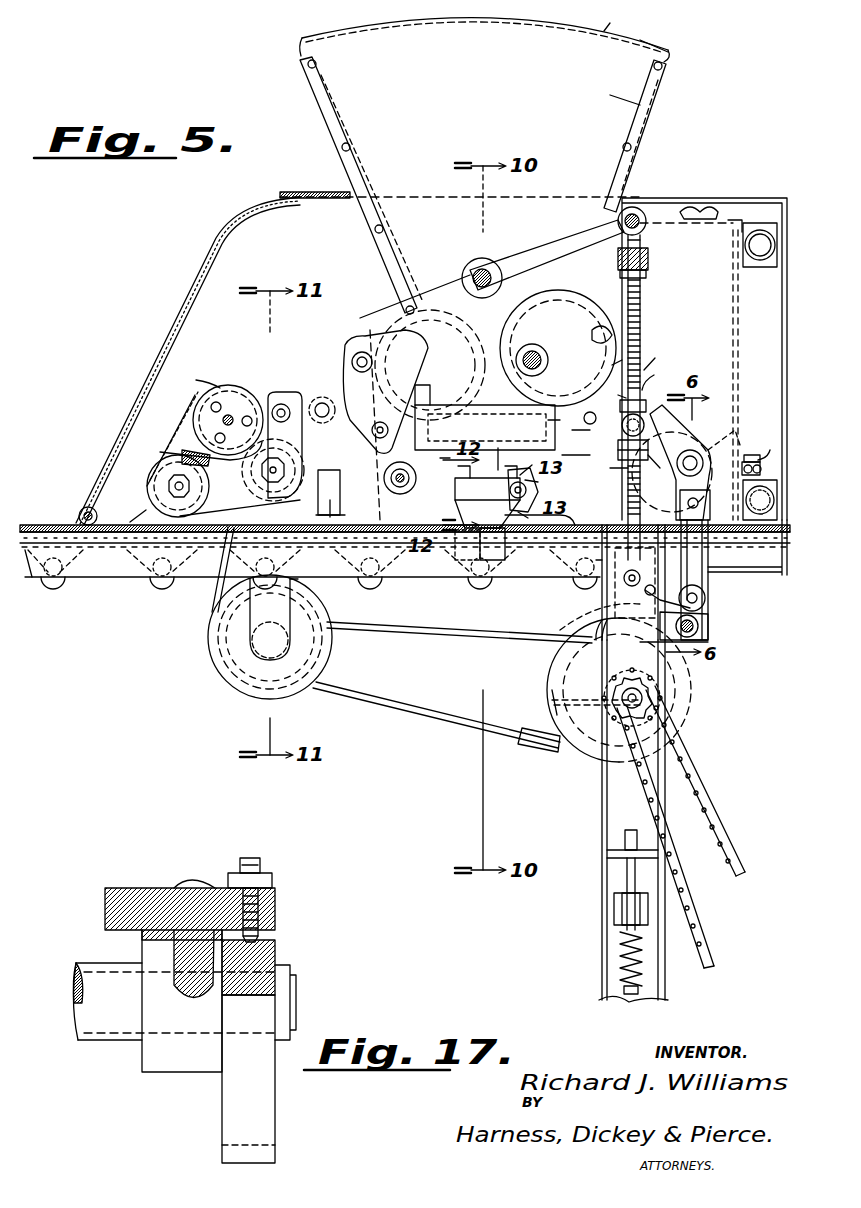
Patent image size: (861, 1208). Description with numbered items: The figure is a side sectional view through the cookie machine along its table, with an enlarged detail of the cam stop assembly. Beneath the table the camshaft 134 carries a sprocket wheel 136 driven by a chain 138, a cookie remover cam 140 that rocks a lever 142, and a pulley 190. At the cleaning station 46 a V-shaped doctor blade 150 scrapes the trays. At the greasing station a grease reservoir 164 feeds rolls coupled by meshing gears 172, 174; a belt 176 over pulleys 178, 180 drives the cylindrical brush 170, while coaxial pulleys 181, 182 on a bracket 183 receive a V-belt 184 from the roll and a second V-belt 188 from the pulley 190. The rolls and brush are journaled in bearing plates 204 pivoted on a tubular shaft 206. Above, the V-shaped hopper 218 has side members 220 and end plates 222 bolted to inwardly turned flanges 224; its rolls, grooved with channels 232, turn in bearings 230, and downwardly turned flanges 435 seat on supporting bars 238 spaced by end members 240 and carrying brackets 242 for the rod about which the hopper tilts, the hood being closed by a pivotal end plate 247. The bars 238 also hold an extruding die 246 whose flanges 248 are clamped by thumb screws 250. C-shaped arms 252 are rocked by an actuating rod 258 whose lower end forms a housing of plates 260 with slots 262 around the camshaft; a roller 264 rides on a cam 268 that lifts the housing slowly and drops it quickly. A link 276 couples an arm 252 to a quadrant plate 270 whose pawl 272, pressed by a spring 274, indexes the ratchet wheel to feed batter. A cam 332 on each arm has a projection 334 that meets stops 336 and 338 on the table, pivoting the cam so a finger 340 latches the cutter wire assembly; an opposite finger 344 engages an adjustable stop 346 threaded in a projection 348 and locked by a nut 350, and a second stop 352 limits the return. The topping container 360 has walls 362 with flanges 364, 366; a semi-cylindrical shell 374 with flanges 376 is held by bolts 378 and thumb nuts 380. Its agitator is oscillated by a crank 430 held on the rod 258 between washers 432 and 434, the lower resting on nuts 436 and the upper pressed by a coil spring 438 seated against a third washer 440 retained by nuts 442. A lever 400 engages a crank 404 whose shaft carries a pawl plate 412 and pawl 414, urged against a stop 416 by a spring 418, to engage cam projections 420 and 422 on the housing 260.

In FIG. 5, the cleaning station 46 is at (80, 510).
In FIG. 5, the cam shaft 134 is at (644, 698).
In FIG. 5, the sprocket wheel 136 is at (654, 706).
In FIG. 5, the chain 138 is at (712, 785).
In FIG. 5, the cookie remover cam 140 is at (562, 668).
In FIG. 5, the lever 142 is at (546, 756).
In FIG. 5, the V-shaped doctor blade 150 is at (126, 500).
In FIG. 5, the grease containing reservoir 164 is at (340, 488).
In FIG. 5, the cylindrical brush 170 is at (166, 440).
In FIG. 5, the meshing gear 172 is at (312, 455).
In FIG. 5, the meshing gear 174 is at (191, 379).
In FIG. 5, the belt 176 is at (184, 424).
In FIG. 5, the pulley 178 is at (234, 384).
In FIG. 5, the pulley 180 is at (168, 462).
In FIG. 5, the smaller pulley 181 is at (333, 652).
In FIG. 5, the larger pulley 182 is at (226, 600).
In FIG. 5, the bracket 183 is at (330, 580).
In FIG. 5, the V-belt 184 is at (332, 612).
In FIG. 5, the second V-belt 188 is at (436, 716).
In FIG. 5, the pulley 190 is at (662, 688).
In FIG. 5, the bearing plates 204 is at (284, 400).
In FIG. 5, the tubular shaft 206 is at (318, 398).
In FIG. 5, the V-shaped hopper 218 is at (672, 50).
In FIG. 5, the side members 220 is at (648, 122).
In FIG. 5, the end plates 222 is at (620, 20).
In FIG. 5, the inwardly turned flanges 224 is at (640, 105).
In FIG. 5, the bearings 230 is at (470, 428).
In FIG. 5, the channels 232 is at (487, 427).
In FIG. 5, the supporting bars 238 is at (590, 424).
In FIG. 5, the end members 240 is at (565, 432).
In FIG. 5, the brackets 242 is at (372, 455).
In FIG. 5, the extruding die 246 is at (575, 462).
In FIG. 5, the end plate 247 is at (155, 338).
In FIG. 5, the flanges 248 is at (585, 439).
In FIG. 5, the thumb screws 250 is at (478, 268).
In FIG. 5, the C-shaped arms 252 is at (530, 244).
In FIG. 17, the C-shaped arms 252 is at (176, 990).
In FIG. 5, the actuating rod 258 is at (640, 305).
In FIG. 5, the flat spaced members 260 is at (600, 790).
In FIG. 5, the slots 262 is at (588, 614).
In FIG. 5, the roller 264 is at (598, 583).
In FIG. 5, the cam 268 is at (552, 694).
In FIG. 5, the quadrant plate 270 is at (644, 328).
In FIG. 5, the pawl 272 is at (600, 300).
In FIG. 5, the spring 274 is at (596, 325).
In FIG. 5, the link 276 is at (516, 362).
In FIG. 5, the cams 332 is at (470, 556).
In FIG. 17, the cams 332 is at (278, 1121).
In FIG. 5, the projection 334 is at (520, 555).
In FIG. 5, the stop 336 is at (562, 516).
In FIG. 5, the stop 338 is at (335, 501).
In FIG. 5, the finger 340 is at (542, 496).
In FIG. 5, the finger 344 is at (455, 510).
In FIG. 17, the finger 344 is at (278, 950).
In FIG. 5, the adjustable stop 346 is at (450, 492).
In FIG. 17, the adjustable stop 346 is at (290, 934).
In FIG. 17, the projection 348 is at (262, 906).
In FIG. 17, the locking nut 350 is at (276, 880).
In FIG. 5, the second adjustable stop 352 is at (510, 455).
In FIG. 5, the container 360 is at (712, 205).
In FIG. 5, the walls 362 is at (740, 305).
In FIG. 5, the flanges 364 is at (746, 220).
In FIG. 5, the flanges 366 is at (754, 455).
In FIG. 5, the semi-cylindrical shell 374 is at (680, 505).
In FIG. 5, the flanges 376 is at (770, 445).
In FIG. 5, the bolts 378 is at (748, 460).
In FIG. 5, the thumb nuts 380 is at (760, 500).
In FIG. 5, the crank 400 is at (698, 440).
In FIG. 5, the crank 404 is at (730, 556).
In FIG. 5, the pawl plate 412 is at (692, 606).
In FIG. 5, the pawl 414 is at (708, 618).
In FIG. 5, the stop 416 is at (708, 641).
In FIG. 5, the spring 418 is at (698, 628).
In FIG. 5, the cam projection 420 is at (642, 578).
In FIG. 5, the cam projection 422 is at (706, 594).
In FIG. 5, the crank 430 is at (640, 418).
In FIG. 5, the lower washer 432 is at (608, 470).
In FIG. 5, the upper washer 434 is at (623, 407).
In FIG. 5, the flanges 435 is at (602, 402).
In FIG. 5, the nuts 436 is at (659, 465).
In FIG. 5, the coil spring 438 is at (661, 375).
In FIG. 5, the third washer 440 is at (662, 358).
In FIG. 5, the nuts 442 is at (605, 364).